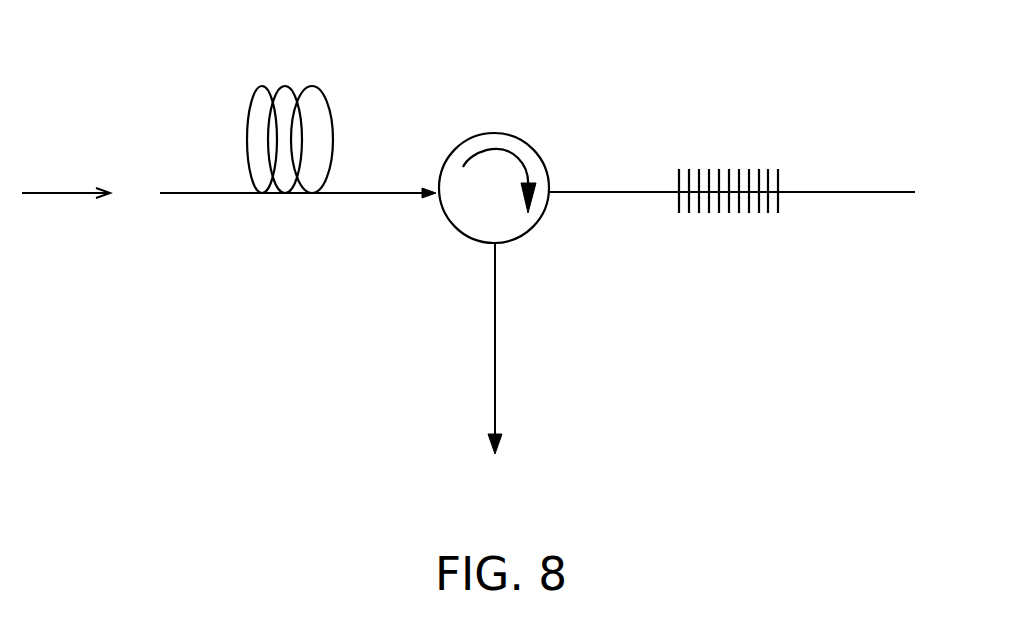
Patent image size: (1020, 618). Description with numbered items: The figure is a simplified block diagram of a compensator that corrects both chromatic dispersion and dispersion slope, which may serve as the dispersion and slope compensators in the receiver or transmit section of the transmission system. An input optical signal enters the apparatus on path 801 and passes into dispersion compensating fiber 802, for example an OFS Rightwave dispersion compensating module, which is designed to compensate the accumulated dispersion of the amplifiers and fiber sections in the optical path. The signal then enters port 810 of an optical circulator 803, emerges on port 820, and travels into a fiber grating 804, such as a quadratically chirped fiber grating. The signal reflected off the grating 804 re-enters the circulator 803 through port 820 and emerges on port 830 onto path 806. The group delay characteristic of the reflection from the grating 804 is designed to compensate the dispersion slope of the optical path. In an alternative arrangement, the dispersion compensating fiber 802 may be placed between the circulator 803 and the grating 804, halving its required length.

The path 801 is at (194, 195).
The dispersion compensating fiber 802 is at (290, 84).
The optical circulator 803 is at (495, 133).
The fiber grating 804 is at (762, 170).
The path 806 is at (499, 363).
The port 810 is at (407, 173).
The port 820 is at (614, 173).
The port 830 is at (515, 349).